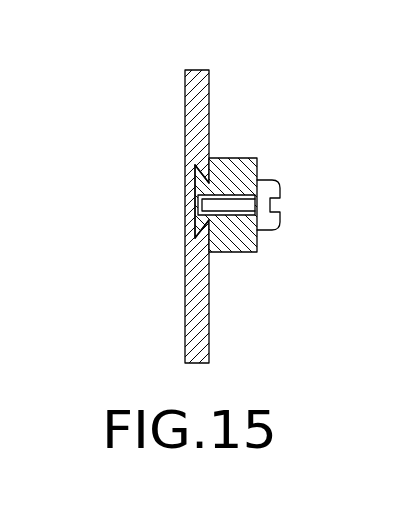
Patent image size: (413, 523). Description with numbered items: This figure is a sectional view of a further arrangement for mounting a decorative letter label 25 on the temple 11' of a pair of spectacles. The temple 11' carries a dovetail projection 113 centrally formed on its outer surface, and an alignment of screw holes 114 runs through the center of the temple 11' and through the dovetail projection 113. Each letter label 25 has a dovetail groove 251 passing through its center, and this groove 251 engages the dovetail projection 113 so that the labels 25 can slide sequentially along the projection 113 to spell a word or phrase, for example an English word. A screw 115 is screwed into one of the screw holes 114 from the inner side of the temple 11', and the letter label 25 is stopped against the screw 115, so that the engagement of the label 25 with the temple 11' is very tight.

The letter label 25 is at (197, 125).
The dovetail groove 251 is at (207, 175).
The dovetail projection 113 is at (200, 180).
The screw hole 114 is at (242, 184).
The screw 115 is at (279, 197).
The fixing block 11' is at (232, 210).